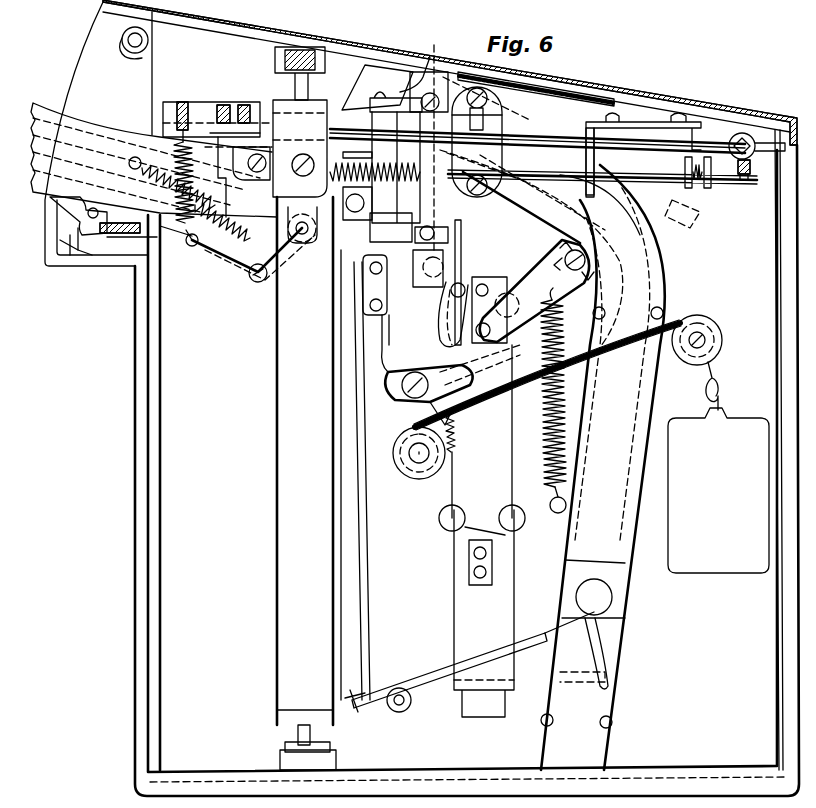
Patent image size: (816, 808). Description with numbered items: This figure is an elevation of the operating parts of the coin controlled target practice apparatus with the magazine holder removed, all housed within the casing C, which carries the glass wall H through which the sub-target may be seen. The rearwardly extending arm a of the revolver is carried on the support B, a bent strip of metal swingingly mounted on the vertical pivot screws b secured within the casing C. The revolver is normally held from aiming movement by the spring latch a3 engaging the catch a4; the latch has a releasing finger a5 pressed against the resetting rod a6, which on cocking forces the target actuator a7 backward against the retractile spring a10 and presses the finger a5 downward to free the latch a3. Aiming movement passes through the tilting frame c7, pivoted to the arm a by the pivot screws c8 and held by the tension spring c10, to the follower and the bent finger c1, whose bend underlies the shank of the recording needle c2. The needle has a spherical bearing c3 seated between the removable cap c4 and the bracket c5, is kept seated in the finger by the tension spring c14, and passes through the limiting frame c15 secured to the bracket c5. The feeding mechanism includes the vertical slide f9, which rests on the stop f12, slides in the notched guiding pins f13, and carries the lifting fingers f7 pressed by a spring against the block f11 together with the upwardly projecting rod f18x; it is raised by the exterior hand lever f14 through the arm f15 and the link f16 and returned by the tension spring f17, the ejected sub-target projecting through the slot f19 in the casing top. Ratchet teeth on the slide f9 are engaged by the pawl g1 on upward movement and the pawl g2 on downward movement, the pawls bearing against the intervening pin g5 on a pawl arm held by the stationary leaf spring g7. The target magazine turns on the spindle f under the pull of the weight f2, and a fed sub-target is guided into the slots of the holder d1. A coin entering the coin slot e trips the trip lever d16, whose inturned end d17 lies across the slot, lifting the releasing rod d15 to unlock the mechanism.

The casing C is at (135, 478).
The glass wall H is at (570, 86).
The tension spring c14 is at (683, 130).
The arm a is at (97, 140).
The retractile spring a10 is at (148, 158).
The releasing finger a5 is at (85, 200).
The spring latch a3 is at (85, 240).
The catch a4 is at (102, 266).
The tension spring c10 is at (183, 243).
The resetting rod a6 is at (225, 262).
The target actuator a7 is at (292, 258).
The tilting frame c7 is at (190, 108).
The holder d1 is at (215, 160).
The pivot screws c8 is at (254, 170).
The vertical pivot screws b is at (280, 100).
The support B is at (307, 412).
The releasing rod d15 is at (362, 512).
The slot f19 is at (392, 86).
The recording needle c2 is at (556, 165).
The limiting frame c15 is at (612, 186).
The removable cap c4 is at (682, 180).
The spherical bearing c3 is at (703, 182).
The bent finger c1 is at (752, 170).
The bracket c5 is at (598, 128).
The exterior hand lever f14 is at (690, 222).
The coin slot e is at (605, 573).
The inturned end d17 is at (605, 635).
The arm f15 is at (530, 278).
The link f16 is at (490, 285).
The upwardly projecting rod f18x is at (460, 240).
The lifting fingers f7 is at (443, 330).
The block f11 is at (540, 292).
The tension spring f17 is at (522, 460).
The notched guiding pins f13 is at (520, 530).
The vertical slide f9 is at (466, 466).
The stop f12 is at (475, 712).
The stationary leaf spring g7 is at (378, 312).
The pawl g1 is at (420, 372).
The pawl g2 is at (425, 405).
The intervening pin g5 is at (475, 370).
The spindle f is at (405, 478).
The weight f2 is at (718, 444).
The trip lever d16 is at (422, 680).